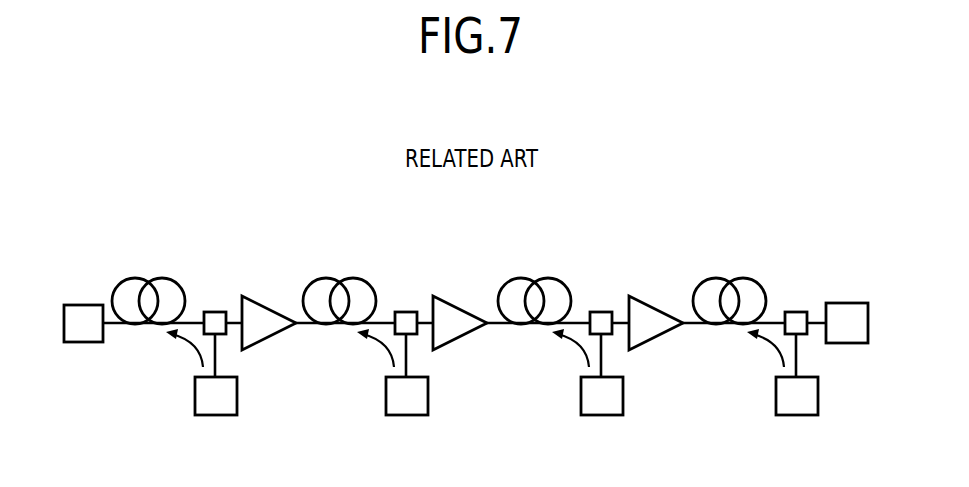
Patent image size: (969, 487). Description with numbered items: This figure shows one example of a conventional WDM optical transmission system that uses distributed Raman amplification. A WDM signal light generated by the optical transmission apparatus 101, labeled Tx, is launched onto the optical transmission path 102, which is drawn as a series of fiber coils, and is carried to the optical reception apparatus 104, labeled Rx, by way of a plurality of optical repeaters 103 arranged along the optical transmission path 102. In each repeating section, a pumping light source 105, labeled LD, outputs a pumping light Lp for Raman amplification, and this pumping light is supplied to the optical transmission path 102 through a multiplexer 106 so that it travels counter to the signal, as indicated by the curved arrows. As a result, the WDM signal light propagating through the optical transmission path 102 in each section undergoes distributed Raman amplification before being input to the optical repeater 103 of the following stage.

The optical transmission apparatus (Tx) 101 is at (81, 304).
The optical transmission path 102 is at (148, 282).
The optical repeater 103 is at (256, 295).
The optical reception apparatus (Rx) 104 is at (850, 303).
The pumping light source (LD) 105 is at (206, 416).
The multiplexer 106 is at (213, 311).